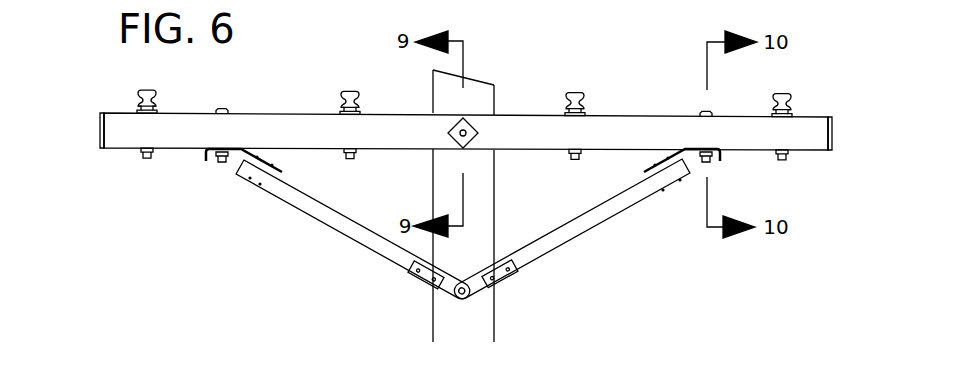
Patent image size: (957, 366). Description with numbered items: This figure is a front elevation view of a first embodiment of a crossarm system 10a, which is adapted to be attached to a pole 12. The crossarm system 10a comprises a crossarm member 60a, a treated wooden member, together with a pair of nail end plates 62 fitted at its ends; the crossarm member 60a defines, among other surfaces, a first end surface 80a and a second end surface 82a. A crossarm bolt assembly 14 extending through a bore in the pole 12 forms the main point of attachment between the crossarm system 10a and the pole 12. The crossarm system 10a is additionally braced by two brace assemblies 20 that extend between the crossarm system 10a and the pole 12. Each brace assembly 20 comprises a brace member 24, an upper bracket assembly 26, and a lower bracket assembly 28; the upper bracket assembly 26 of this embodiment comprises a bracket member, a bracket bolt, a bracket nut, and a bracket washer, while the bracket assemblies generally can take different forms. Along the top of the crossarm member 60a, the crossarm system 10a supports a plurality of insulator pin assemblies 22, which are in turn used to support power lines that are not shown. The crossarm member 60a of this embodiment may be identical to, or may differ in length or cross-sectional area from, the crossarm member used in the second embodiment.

The crossarm system 10a is at (251, 291).
The pole 12 is at (447, 323).
The crossarm bolt assembly 14 is at (468, 117).
The brace assembly 20 is at (303, 219).
The insulator pin assembly 22 is at (153, 85).
The brace member 24 is at (355, 231).
The upper bracket assembly 26 is at (220, 178).
The lower bracket assembly 28 is at (406, 293).
The crossarm member 60a is at (618, 124).
The nail end plate 62 is at (98, 118).
The first end surface 80a is at (832, 150).
The second end surface 82a is at (100, 136).